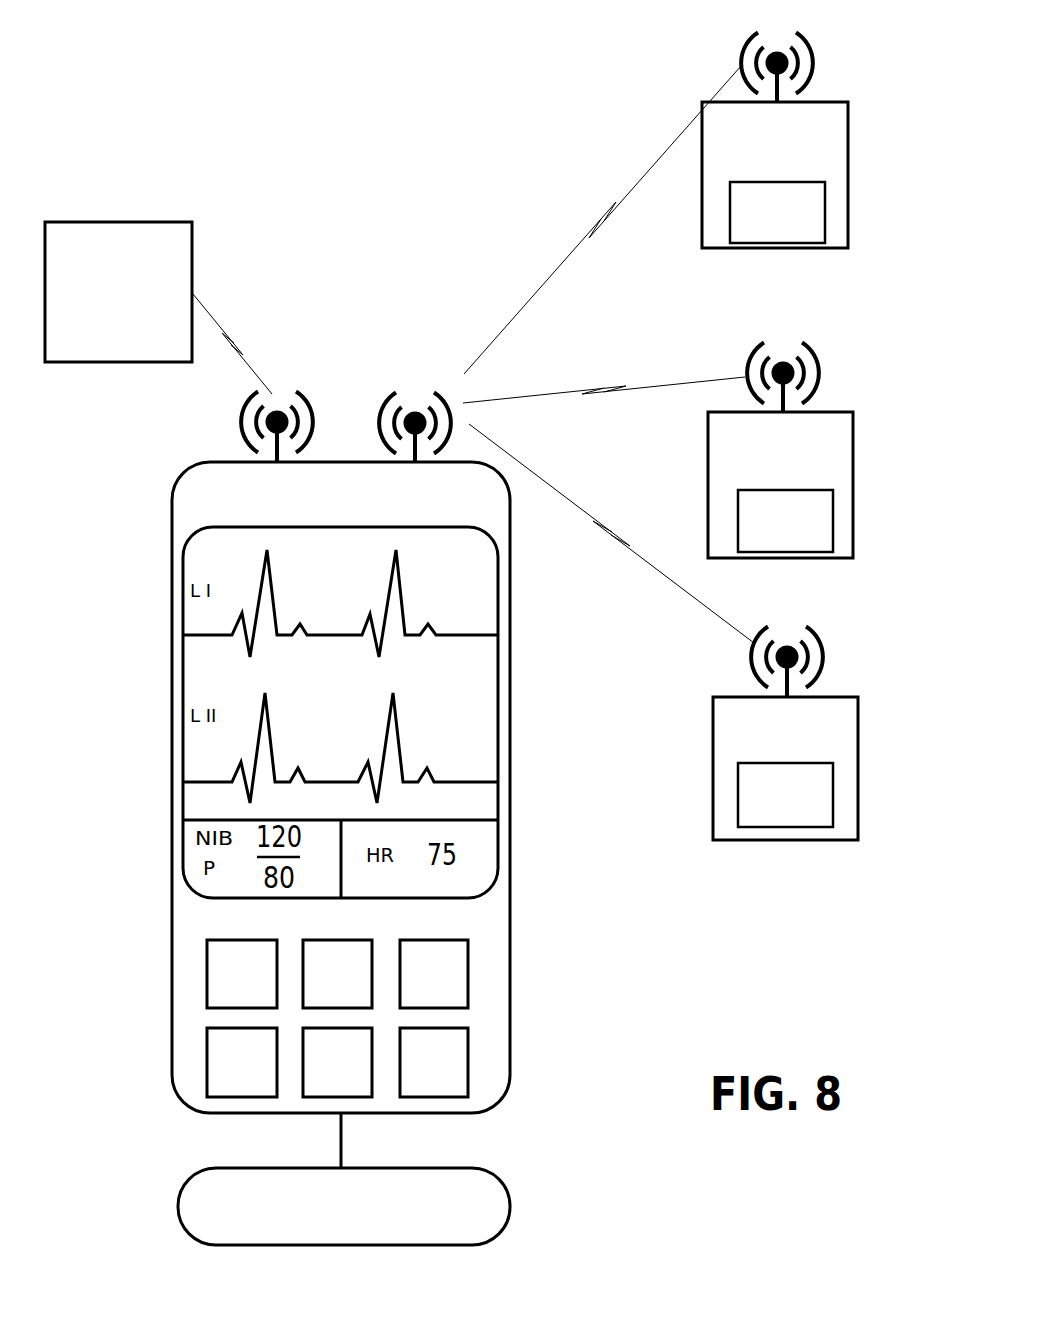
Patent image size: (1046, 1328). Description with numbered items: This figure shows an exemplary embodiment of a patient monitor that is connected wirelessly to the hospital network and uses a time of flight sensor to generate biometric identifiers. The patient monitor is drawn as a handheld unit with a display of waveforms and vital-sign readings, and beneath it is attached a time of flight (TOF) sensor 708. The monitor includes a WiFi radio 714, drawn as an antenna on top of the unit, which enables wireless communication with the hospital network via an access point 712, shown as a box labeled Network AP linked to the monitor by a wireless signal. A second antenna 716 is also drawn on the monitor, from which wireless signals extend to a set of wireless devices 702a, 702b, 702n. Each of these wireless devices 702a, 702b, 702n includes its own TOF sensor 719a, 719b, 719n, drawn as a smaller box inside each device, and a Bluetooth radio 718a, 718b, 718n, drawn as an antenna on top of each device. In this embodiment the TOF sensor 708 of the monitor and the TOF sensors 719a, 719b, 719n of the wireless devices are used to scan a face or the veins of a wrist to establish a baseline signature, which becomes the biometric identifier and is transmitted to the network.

The wireless device 702a is at (830, 127).
The wireless device 702b is at (837, 436).
The wireless device 702n is at (840, 721).
The time of flight (TOF) sensor 708 is at (488, 1195).
The access point 712 is at (107, 227).
The WiFi radio 714 is at (278, 402).
The second antenna of patient monitor 716 is at (415, 402).
The Bluetooth radio 718a is at (778, 43).
The Bluetooth radio 718b is at (785, 353).
The Bluetooth radio 718n is at (787, 642).
The TOF sensor 719a is at (815, 208).
The TOF sensor 719b is at (823, 517).
The TOF sensor 719n is at (823, 788).